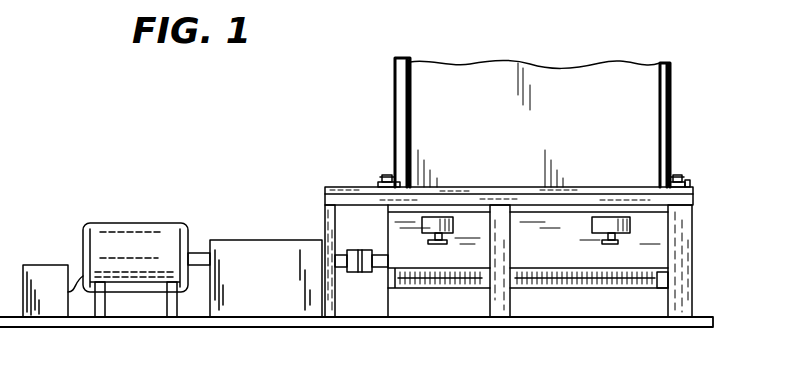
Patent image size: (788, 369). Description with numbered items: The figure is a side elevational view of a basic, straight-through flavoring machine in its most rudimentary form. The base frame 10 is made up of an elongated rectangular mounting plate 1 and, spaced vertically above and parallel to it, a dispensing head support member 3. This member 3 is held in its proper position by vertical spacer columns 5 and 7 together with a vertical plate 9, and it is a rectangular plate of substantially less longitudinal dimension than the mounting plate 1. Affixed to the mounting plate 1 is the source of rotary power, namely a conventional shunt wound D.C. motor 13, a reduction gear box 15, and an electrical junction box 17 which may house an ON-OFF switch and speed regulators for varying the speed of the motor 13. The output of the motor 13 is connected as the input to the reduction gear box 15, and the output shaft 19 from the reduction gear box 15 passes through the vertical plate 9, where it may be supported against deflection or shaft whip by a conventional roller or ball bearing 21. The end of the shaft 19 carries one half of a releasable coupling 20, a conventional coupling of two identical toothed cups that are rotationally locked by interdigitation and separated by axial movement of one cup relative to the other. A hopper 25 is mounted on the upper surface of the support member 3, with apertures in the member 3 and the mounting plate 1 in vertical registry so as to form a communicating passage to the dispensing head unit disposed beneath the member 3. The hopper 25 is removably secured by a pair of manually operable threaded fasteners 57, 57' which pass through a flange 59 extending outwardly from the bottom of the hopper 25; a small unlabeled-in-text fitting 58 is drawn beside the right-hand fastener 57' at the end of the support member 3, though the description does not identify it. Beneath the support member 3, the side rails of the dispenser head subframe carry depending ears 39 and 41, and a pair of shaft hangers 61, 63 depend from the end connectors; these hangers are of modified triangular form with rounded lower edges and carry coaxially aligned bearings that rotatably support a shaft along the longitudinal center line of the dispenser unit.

The mounting plate 1 is at (195, 328).
The dispensing head support member 3 is at (508, 203).
The vertical spacer column 5 is at (500, 320).
The vertical spacer column 7 is at (683, 305).
The vertical plate 9 is at (325, 308).
The base frame 10 is at (447, 303).
The shunt wound D.C. motor 13 is at (135, 237).
The reduction gear box 15 is at (265, 246).
The electrical junction box 17 is at (47, 272).
The output shaft 19 is at (345, 254).
The releasable coupling 20 is at (358, 243).
The bearing 21 is at (346, 273).
The hopper 25 is at (528, 137).
The depending ear 39 is at (440, 216).
The depending ear 41 is at (617, 216).
The threaded fastener 57 is at (376, 127).
The threaded fastener 57' is at (699, 153).
The nut 58 is at (690, 181).
The flange 59 is at (399, 184).
The shaft hanger 61 is at (397, 286).
The shaft hanger 63 is at (657, 284).